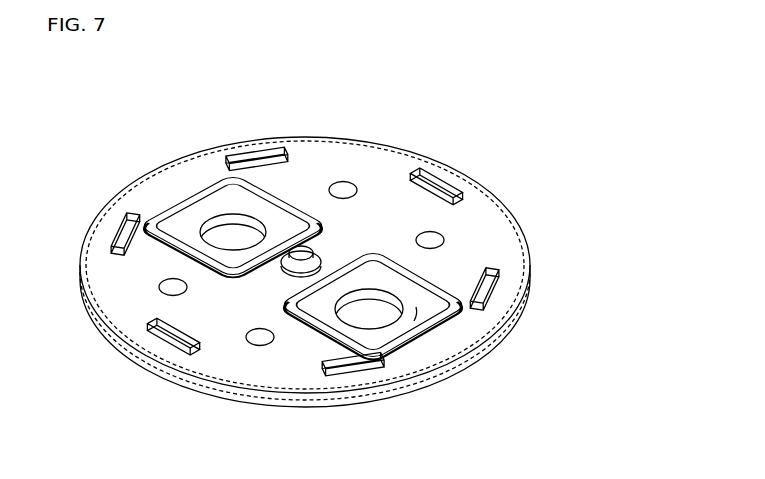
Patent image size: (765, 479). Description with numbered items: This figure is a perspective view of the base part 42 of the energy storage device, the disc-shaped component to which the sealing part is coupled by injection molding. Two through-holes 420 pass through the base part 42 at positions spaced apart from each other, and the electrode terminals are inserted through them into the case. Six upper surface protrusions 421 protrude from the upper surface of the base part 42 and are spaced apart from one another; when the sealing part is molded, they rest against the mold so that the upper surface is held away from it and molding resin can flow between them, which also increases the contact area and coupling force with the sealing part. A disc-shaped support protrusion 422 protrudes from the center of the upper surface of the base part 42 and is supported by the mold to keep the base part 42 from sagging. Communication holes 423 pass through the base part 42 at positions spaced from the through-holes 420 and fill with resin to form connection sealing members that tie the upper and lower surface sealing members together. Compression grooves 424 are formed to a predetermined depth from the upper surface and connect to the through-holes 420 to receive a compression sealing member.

The base part 42 is at (81, 96).
The through-holes 420 is at (371, 314).
The upper surface protrusions 421 is at (439, 186).
The support protrusion 422 is at (300, 257).
The communication holes 423 is at (434, 239).
The compression grooves 424 is at (420, 316).